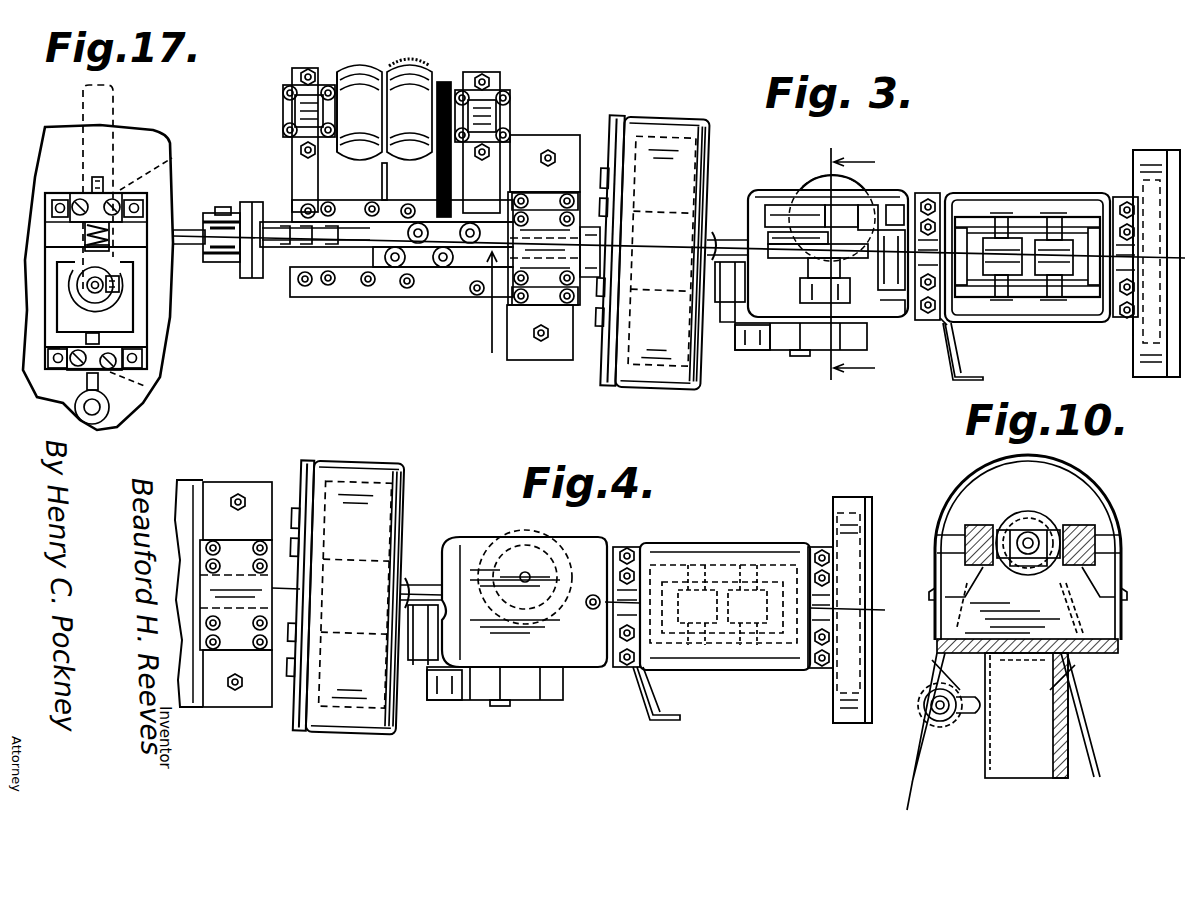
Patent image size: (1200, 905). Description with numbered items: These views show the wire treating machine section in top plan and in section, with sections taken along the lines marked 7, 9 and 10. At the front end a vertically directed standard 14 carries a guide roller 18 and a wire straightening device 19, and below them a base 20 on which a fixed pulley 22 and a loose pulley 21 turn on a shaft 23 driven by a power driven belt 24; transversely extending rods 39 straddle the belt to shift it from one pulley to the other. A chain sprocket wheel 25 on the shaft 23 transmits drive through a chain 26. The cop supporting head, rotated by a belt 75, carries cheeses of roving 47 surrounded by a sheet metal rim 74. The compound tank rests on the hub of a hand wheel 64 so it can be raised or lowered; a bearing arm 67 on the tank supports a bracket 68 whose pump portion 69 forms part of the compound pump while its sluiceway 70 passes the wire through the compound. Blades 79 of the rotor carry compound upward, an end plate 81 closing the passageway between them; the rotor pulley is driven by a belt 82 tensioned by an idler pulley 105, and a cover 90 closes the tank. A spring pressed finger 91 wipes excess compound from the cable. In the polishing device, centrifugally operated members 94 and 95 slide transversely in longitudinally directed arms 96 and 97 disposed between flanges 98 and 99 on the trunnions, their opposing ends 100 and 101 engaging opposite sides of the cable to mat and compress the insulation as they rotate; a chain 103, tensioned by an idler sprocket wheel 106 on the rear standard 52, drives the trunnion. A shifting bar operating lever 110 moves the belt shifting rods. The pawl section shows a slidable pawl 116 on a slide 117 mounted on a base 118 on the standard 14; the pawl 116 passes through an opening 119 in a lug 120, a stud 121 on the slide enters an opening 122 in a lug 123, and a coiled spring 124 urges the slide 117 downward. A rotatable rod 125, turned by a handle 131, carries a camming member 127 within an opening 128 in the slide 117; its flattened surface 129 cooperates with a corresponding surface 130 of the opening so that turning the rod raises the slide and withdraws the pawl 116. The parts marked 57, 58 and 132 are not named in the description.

In FIG. 3, the section line 7- 7 is at (821, 331).
In FIG. 3, the section line 9- 9 is at (867, 265).
In FIG. 3, the drive shaft / section line 10- 10 is at (178, 230).
In FIG. 3, the standard 14 is at (556, 150).
In FIG. 4, the standard 14 is at (240, 495).
In FIG. 3, the guide roller 18 is at (228, 213).
In FIG. 3, the wire straightening device 19 is at (375, 262).
In FIG. 3, the base 20 is at (300, 178).
In FIG. 3, the loose pulley 21 is at (402, 75).
In FIG. 3, the fixed pulley 22 is at (360, 75).
In FIG. 3, the shaft 23 is at (340, 75).
In FIG. 3, the power driven belt 24 is at (420, 62).
In FIG. 3, the chain sprocket wheel 25 is at (470, 88).
In FIG. 3, the chain 26 is at (445, 82).
In FIG. 3, the transversely extending rods 39 is at (384, 180).
In FIG. 3, the roving 47 is at (712, 238).
In FIG. 4, the roving 47 is at (407, 585).
In FIG. 3, the rear standard 52 is at (1133, 165).
In FIG. 4, the rear standard 52 is at (188, 485).
In FIG. 10, the rear standard 52 is at (1015, 770).
In FIG. 3, the hinge block 57 is at (915, 318).
In FIG. 4, the hinge block 57 is at (627, 550).
In FIG. 3, the hinge block / housing 58 is at (1118, 200).
In FIG. 4, the hinge block / housing 58 is at (815, 552).
In FIG. 3, the hand wheel 64 is at (820, 190).
In FIG. 4, the hand wheel 64 is at (527, 535).
In FIG. 3, the bearing arm 67 is at (895, 314).
In FIG. 3, the bracket 68 is at (812, 270).
In FIG. 3, the pump portion 69 is at (775, 208).
In FIG. 3, the sluiceway 70 is at (780, 258).
In FIG. 3, the sheet metal rim 74 is at (690, 135).
In FIG. 4, the sheet metal rim 74 is at (385, 480).
In FIG. 3, the belt 75 is at (618, 127).
In FIG. 4, the belt 75 is at (300, 475).
In FIG. 3, the blades 79 is at (898, 208).
In FIG. 3, the end plate 81 is at (865, 207).
In FIG. 3, the belt 82 is at (802, 350).
In FIG. 4, the belt 82 is at (500, 700).
In FIG. 4, the cover 90 is at (480, 555).
In FIG. 3, the spring pressed finger 91 is at (885, 270).
In FIG. 10, the centrifugally operated member 94 is at (1050, 528).
In FIG. 10, the centrifugally operated member 95 is at (1005, 533).
In FIG. 3, the longitudinally directed arm 96 is at (1028, 290).
In FIG. 10, the longitudinally directed arm 96 is at (1092, 530).
In FIG. 3, the longitudinally directed arm 97 is at (1028, 230).
In FIG. 10, the longitudinally directed arm 97 is at (968, 528).
In FIG. 3, the flange 98 is at (942, 325).
In FIG. 3, the flange 99 is at (1093, 292).
In FIG. 10, the flange 99 is at (980, 575).
In FIG. 10, the opposing end 100 is at (1020, 538).
In FIG. 10, the opposing end 101 is at (1085, 578).
In FIG. 10, the chain 103 is at (910, 755).
In FIG. 3, the idler pulley 105 is at (762, 350).
In FIG. 4, the idler pulley 105 is at (455, 700).
In FIG. 10, the idler sprocket wheel 106 is at (940, 728).
In FIG. 3, the shifting bar operating lever 110 is at (955, 375).
In FIG. 4, the shifting bar operating lever 110 is at (655, 690).
In FIG. 17, the slidable pawl 116 is at (110, 387).
In FIG. 17, the slide 117 is at (137, 313).
In FIG. 17, the base 118 is at (133, 228).
In FIG. 17, the opening 119 is at (100, 373).
In FIG. 17, the lug 120 is at (148, 368).
In FIG. 17, the stud 121 is at (99, 188).
In FIG. 17, the opening 122 is at (165, 166).
In FIG. 17, the lug 123 is at (80, 200).
In FIG. 17, the coiled spring 124 is at (108, 237).
In FIG. 17, the rotatable rod 125 is at (87, 297).
In FIG. 17, the camming member 127 is at (107, 300).
In FIG. 17, the opening 128 is at (127, 327).
In FIG. 17, the flattened surface 129 is at (82, 263).
In FIG. 17, the surface 130 is at (128, 275).
In FIG. 3, the handle 131 is at (696, 292).
In FIG. 4, the handle 131 is at (392, 645).
In FIG. 3, the wheel hub bracket 132 is at (606, 208).
In FIG. 4, the wheel hub bracket 132 is at (298, 550).